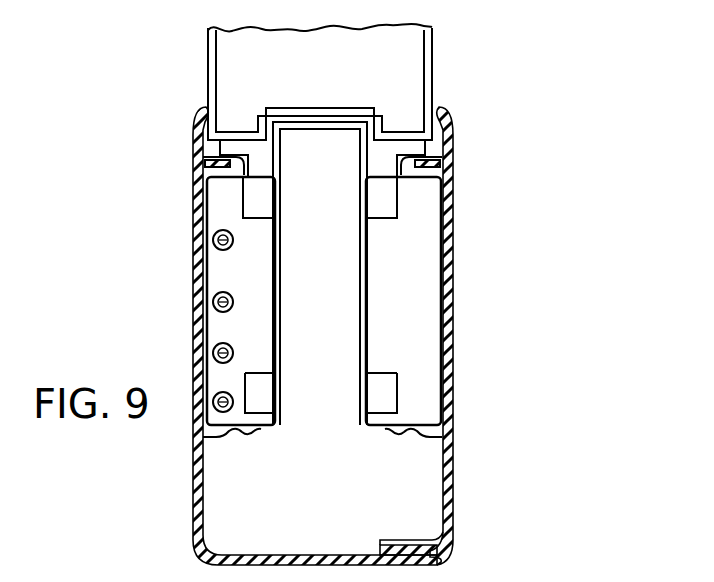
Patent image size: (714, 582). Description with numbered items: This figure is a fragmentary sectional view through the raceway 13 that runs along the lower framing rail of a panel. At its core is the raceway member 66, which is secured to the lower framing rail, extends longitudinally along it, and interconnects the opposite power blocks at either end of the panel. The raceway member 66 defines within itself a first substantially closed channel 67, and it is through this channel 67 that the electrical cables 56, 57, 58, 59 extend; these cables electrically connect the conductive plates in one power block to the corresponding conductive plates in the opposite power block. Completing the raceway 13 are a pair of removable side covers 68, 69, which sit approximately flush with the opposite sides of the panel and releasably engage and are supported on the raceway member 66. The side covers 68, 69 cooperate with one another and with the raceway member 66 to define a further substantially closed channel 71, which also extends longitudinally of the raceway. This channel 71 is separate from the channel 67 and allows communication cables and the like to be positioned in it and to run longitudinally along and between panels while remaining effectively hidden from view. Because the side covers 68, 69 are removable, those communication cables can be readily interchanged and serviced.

The raceway 13 is at (455, 350).
The electrical cable 56 is at (213, 240).
The electrical cable 57 is at (213, 302).
The electrical cable 58 is at (213, 352).
The electrical cable 59 is at (213, 400).
The raceway member 66 is at (283, 320).
The first substantially closed channel 67 is at (255, 258).
The removable side cover 68 is at (452, 260).
The removable side cover 69 is at (193, 481).
The further substantially closed channel 71 is at (418, 485).